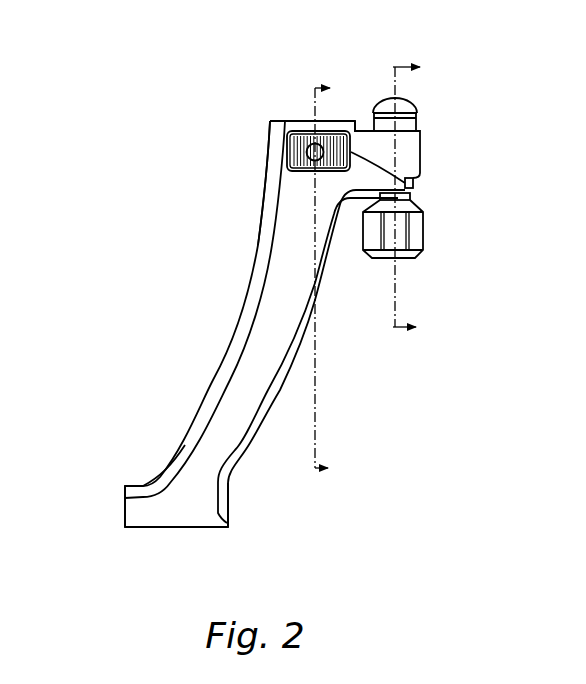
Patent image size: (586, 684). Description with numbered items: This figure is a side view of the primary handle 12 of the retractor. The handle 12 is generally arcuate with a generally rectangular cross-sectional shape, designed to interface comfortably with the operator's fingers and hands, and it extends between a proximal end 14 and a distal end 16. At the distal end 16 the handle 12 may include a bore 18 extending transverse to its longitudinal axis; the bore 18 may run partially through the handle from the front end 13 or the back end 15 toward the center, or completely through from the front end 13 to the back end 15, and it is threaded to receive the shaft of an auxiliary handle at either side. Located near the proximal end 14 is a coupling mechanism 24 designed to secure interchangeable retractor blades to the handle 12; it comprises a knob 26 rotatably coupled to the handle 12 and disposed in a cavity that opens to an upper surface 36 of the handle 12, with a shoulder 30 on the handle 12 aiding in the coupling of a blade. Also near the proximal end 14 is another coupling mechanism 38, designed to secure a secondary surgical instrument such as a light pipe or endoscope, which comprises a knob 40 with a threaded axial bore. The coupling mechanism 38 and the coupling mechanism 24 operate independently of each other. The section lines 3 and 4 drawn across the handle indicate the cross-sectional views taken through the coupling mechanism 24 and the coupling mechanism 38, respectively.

The primary handle 12 is at (206, 134).
The front end 13 is at (124, 520).
The proximal end 14 is at (266, 162).
The back end 15 is at (230, 507).
The distal end 16 is at (139, 484).
The bore 18 is at (121, 503).
The coupling mechanism 24 is at (294, 184).
The knob 26 is at (291, 128).
The shoulder 30 is at (357, 120).
The upper surface 36 is at (347, 119).
The coupling mechanism 38 is at (428, 104).
The knob 40 is at (425, 222).
The section line 3- 3 is at (323, 279).
The section line 4- 4 is at (406, 197).